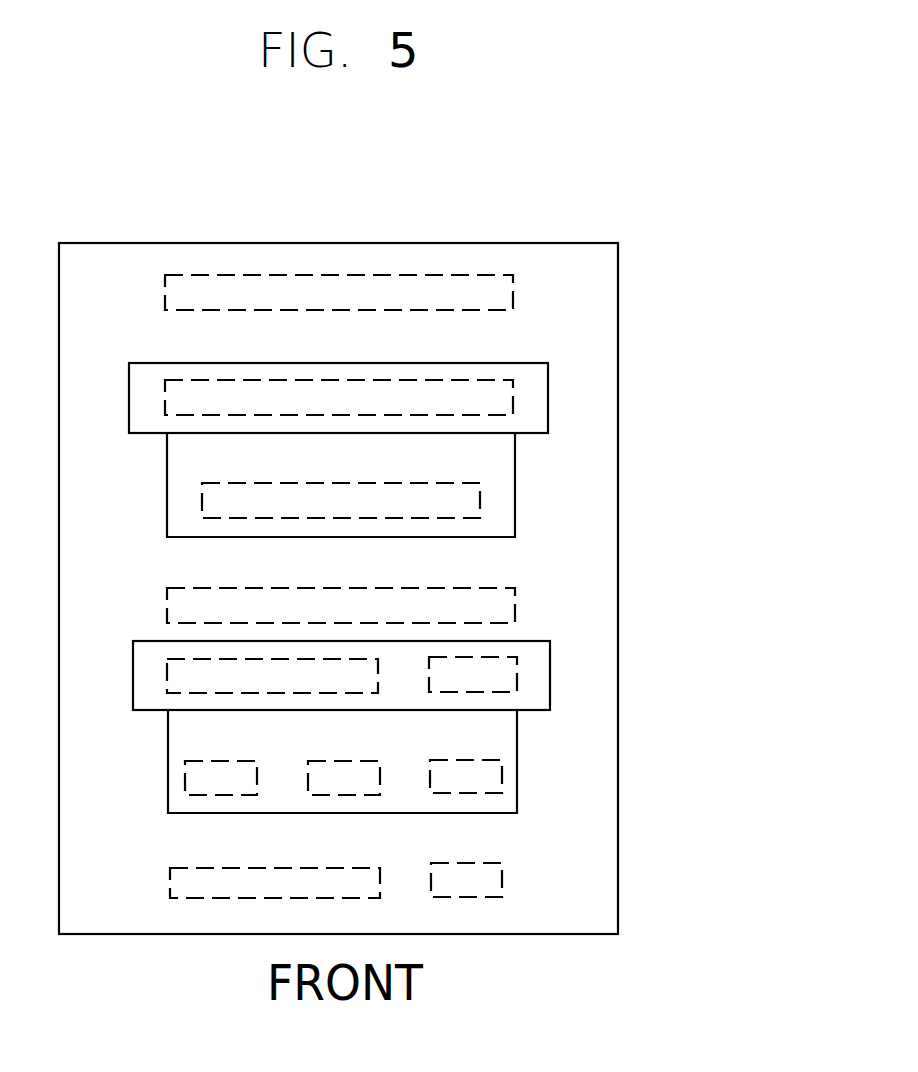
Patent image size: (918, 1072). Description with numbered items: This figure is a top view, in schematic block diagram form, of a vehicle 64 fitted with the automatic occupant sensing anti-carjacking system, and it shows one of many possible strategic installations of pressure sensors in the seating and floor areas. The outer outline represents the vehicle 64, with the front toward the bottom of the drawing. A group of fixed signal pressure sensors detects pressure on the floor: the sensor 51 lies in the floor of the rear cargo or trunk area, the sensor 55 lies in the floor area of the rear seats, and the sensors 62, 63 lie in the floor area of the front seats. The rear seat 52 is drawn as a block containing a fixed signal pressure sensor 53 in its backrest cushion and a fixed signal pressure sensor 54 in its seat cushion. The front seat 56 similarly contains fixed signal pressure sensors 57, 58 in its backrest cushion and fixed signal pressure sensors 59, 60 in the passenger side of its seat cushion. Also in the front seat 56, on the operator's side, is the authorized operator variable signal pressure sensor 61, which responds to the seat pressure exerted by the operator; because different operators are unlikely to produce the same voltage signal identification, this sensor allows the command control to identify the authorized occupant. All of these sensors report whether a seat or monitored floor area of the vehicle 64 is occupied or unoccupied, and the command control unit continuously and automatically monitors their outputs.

The fixed signal pressure sensor 51 is at (165, 284).
The rear seat 52 is at (515, 497).
The fixed signal pressure sensor 53 is at (165, 395).
The fixed signal pressure sensor 54 is at (202, 503).
The fixed signal pressure sensor 55 is at (167, 598).
The front seat 56 is at (550, 688).
The fixed signal pressure sensor 57 is at (517, 665).
The fixed signal pressure sensor 58 is at (167, 686).
The fixed signal pressure sensor 59 is at (185, 775).
The fixed signal pressure sensor 60 is at (338, 795).
The authorized operator variable signal pressure sensor 61 is at (502, 770).
The fixed signal pressure sensor 62 is at (170, 872).
The fixed signal pressure sensor 63 is at (502, 888).
The vehicle 64 is at (618, 410).